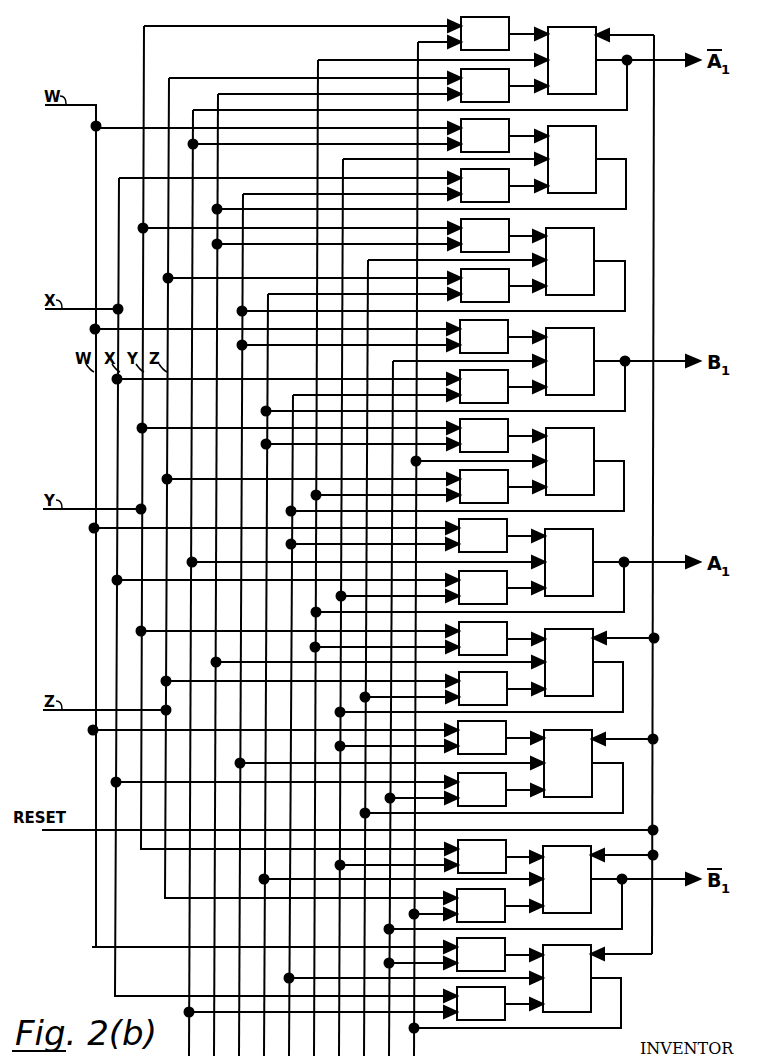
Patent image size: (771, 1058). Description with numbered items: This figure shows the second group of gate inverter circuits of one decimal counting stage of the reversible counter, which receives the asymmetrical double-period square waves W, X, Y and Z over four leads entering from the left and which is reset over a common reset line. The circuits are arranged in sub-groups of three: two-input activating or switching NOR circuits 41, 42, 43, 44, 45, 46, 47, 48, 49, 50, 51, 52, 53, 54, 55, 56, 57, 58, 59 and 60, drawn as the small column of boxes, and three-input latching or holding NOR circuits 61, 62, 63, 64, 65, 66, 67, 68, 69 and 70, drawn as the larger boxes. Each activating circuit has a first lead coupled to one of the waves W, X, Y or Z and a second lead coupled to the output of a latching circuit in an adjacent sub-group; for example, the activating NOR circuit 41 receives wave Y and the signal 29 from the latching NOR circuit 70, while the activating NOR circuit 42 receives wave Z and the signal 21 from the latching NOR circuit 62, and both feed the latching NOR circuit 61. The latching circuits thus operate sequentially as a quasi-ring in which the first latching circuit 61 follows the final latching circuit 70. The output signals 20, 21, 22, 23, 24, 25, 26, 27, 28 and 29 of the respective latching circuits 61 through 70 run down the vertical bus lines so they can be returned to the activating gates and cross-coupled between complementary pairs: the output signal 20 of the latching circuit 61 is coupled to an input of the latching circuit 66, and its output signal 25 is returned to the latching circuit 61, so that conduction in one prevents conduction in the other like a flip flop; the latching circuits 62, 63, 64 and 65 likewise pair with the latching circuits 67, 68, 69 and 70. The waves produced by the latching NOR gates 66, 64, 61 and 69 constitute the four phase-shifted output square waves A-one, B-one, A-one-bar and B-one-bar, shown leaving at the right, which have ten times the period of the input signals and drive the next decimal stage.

The output signal 20 is at (621, 61).
The output signal 21 is at (598, 159).
The output signal 22 is at (596, 261).
The output signal 23 is at (618, 346).
The output signal 24 is at (596, 461).
The output signal 25 is at (618, 547).
The output signal 26 is at (595, 662).
The output signal 27 is at (594, 763).
The output signal 28 is at (616, 864).
The output signal 29 is at (593, 978).
The activating NOR circuit 41 is at (515, 10).
The activating NOR circuit 42 is at (509, 92).
The activating NOR circuit 43 is at (515, 112).
The activating NOR circuit 44 is at (509, 192).
The activating NOR circuit 45 is at (515, 212).
The activating NOR circuit 46 is at (509, 292).
The activating NOR circuit 47 is at (514, 313).
The activating NOR circuit 48 is at (508, 393).
The activating NOR circuit 49 is at (514, 412).
The activating NOR circuit 50 is at (508, 493).
The activating NOR circuit 51 is at (513, 512).
The activating NOR circuit 52 is at (507, 594).
The activating NOR circuit 53 is at (513, 615).
The activating NOR circuit 54 is at (507, 695).
The activating NOR circuit 55 is at (512, 714).
The activating NOR circuit 56 is at (506, 796).
The activating NOR circuit 57 is at (512, 833).
The activating NOR circuit 58 is at (505, 912).
The activating NOR circuit 59 is at (511, 931).
The activating NOR circuit 60 is at (505, 1010).
The latching NOR circuit 61 is at (603, 17).
The latching NOR circuit 62 is at (603, 116).
The latching NOR circuit 63 is at (601, 218).
The latching NOR circuit 64 is at (601, 318).
The latching NOR circuit 65 is at (601, 418).
The latching NOR circuit 66 is at (600, 519).
The latching NOR circuit 67 is at (600, 619).
The latching NOR circuit 68 is at (599, 720).
The latching NOR circuit 69 is at (593, 903).
The latching NOR circuit 70 is at (593, 1003).